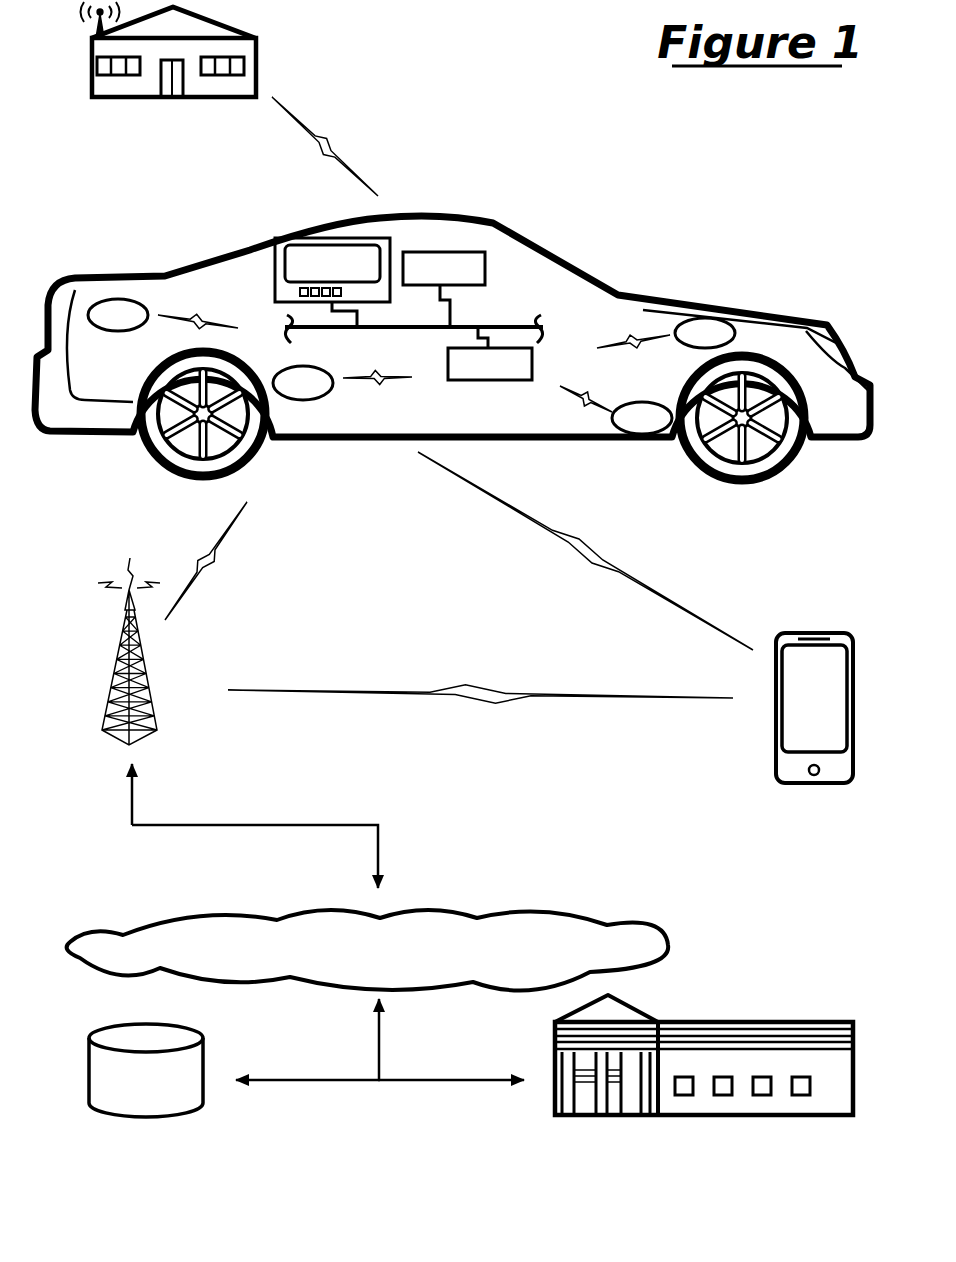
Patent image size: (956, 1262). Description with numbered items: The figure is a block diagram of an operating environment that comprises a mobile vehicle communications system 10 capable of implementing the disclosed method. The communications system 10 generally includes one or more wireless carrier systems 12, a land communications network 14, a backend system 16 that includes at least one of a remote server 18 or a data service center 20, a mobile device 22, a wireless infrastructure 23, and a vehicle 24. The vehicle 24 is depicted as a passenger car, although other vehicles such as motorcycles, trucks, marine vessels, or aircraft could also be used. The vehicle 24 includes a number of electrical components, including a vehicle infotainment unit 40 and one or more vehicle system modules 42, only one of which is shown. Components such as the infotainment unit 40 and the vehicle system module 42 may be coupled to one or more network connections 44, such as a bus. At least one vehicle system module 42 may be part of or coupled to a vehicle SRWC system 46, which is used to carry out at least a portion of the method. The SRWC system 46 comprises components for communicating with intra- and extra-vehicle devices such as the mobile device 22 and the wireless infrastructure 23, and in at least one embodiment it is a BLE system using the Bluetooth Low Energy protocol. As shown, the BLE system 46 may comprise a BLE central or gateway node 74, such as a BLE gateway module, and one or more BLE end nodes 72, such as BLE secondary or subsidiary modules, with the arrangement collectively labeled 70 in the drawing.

The mobile vehicle communications system 10 is at (508, 178).
The wireless carrier system 12 is at (115, 668).
The land communications network 14 is at (368, 950).
The backend system 16 is at (525, 1103).
The remote server 18 is at (146, 1070).
The data service center 20 is at (557, 1047).
The mobile device 22 is at (814, 708).
The wireless infrastructure 23 is at (238, 16).
The vehicle 24 is at (600, 264).
The vehicle infotainment unit 40 is at (332, 270).
The vehicle system module 42 is at (444, 268).
The network connection 44 is at (507, 324).
The vehicle SRWC system 46 is at (425, 355).
The wireless sensor network 70 is at (440, 373).
The BLE end node 72 is at (411, 366).
The BLE central or gateway node 74 is at (490, 364).